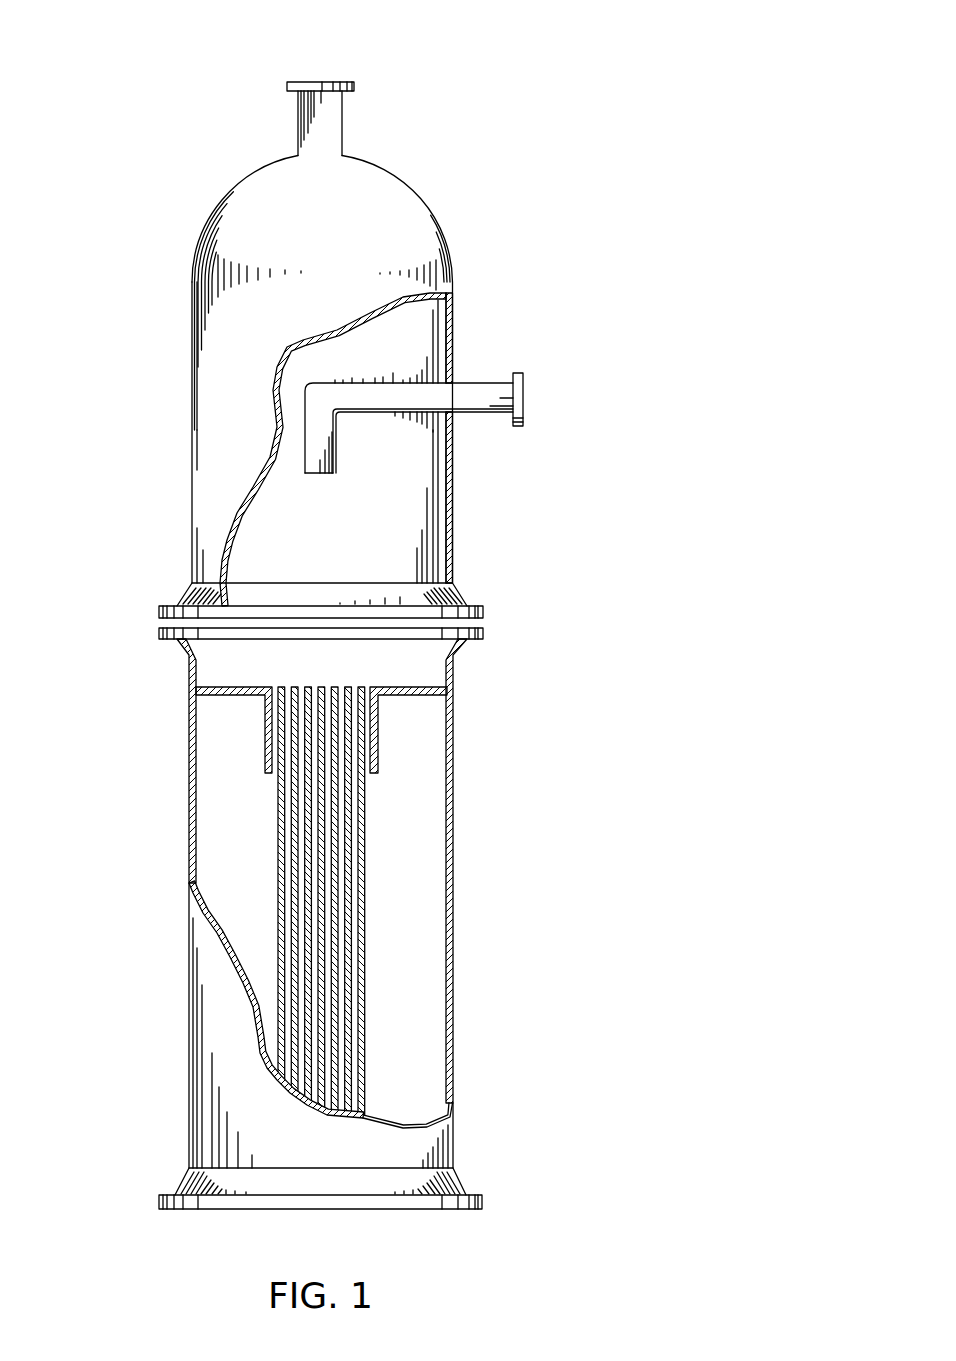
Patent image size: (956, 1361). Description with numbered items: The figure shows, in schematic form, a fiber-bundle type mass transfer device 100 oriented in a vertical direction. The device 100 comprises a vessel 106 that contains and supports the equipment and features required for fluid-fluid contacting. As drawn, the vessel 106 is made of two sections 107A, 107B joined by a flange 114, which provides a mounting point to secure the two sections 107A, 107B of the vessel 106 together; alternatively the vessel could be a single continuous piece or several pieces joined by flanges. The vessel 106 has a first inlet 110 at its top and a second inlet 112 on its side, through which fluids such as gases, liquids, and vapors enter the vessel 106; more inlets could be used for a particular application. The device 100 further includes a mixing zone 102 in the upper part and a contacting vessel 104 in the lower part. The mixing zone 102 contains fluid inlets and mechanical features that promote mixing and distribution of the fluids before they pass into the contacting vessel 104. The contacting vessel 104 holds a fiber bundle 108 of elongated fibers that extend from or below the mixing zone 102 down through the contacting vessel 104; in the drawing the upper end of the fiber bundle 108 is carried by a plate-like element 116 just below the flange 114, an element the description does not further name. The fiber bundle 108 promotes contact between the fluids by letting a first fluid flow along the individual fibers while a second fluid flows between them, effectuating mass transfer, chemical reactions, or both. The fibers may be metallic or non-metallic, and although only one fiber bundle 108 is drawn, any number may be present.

The fiber-bundle type mass transfer device 100 is at (570, 75).
The mixing zone 102 is at (192, 473).
The contacting vessel 104 is at (159, 640).
The vessel 106 is at (443, 211).
The section of the vessel 107A is at (452, 270).
The section of the vessel 107B is at (452, 942).
The fiber bundle 108 is at (365, 855).
The first inlet 110 is at (302, 80).
The second inlet 112 is at (523, 383).
The flange 114 is at (478, 604).
The tube sheet 116 is at (410, 687).